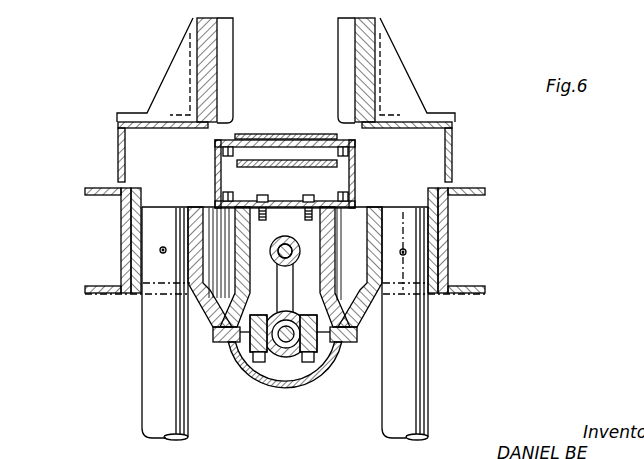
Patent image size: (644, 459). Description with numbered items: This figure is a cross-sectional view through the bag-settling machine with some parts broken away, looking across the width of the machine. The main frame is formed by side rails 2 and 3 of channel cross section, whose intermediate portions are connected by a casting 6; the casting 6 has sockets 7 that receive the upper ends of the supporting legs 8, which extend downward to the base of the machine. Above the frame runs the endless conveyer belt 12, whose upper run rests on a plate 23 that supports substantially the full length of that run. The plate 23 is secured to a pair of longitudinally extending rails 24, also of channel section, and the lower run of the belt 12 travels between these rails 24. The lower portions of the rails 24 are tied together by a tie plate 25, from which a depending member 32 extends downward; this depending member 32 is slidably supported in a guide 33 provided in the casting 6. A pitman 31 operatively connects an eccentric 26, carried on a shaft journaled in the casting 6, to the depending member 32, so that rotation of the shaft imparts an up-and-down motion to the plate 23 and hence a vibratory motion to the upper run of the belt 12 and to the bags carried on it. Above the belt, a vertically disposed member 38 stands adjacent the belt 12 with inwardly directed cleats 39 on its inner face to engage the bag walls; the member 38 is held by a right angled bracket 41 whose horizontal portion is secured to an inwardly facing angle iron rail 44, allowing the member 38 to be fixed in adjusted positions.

The side rail 2 is at (485, 288).
The side rail 3 is at (88, 190).
The casting 6 is at (316, 382).
The socket 7 is at (140, 242).
The leg 8 is at (145, 380).
The endless belt 12 is at (284, 134).
The plate 23 is at (307, 134).
The rail 24 is at (217, 158).
The tie plate 25 is at (291, 201).
The eccentric 26 is at (288, 340).
The pitman 31 is at (297, 290).
The depending member 32 is at (313, 252).
The guide 33 is at (333, 227).
The vertically disposed member 38 is at (207, 32).
The cleat 39 is at (343, 36).
The right angled bracket 41 is at (187, 52).
The angle iron rail 44 is at (118, 134).